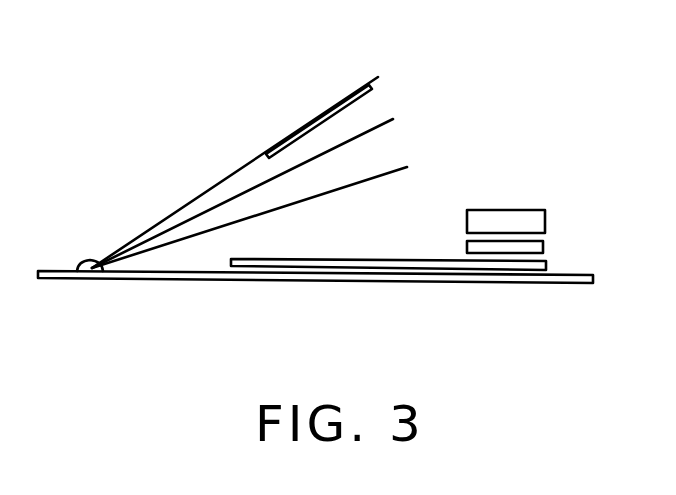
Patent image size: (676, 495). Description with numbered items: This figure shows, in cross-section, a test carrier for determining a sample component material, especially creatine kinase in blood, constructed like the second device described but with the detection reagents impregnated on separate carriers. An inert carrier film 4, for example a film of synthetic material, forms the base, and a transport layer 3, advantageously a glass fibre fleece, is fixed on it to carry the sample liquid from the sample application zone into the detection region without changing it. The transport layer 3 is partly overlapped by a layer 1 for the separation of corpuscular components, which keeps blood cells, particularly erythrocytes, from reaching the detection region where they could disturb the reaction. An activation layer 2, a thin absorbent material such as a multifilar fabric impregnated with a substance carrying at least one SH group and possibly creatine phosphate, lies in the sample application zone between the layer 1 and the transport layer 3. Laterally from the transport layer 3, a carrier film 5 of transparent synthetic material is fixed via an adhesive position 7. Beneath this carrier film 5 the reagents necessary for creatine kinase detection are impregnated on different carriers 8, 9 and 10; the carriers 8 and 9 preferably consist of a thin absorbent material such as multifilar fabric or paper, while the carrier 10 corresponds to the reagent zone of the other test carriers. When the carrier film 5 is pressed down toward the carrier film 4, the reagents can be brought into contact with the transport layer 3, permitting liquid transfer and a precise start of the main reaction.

The layer for the separation of corpuscular components 1 is at (517, 215).
The activation layer 2 is at (545, 250).
The transport layer 3 is at (400, 258).
The carrier film 4 is at (467, 283).
The carrier film 5 is at (226, 178).
The adhesive position 7 is at (84, 262).
The carrier 8 is at (395, 122).
The carrier 9 is at (340, 192).
The carrier 10 is at (373, 88).